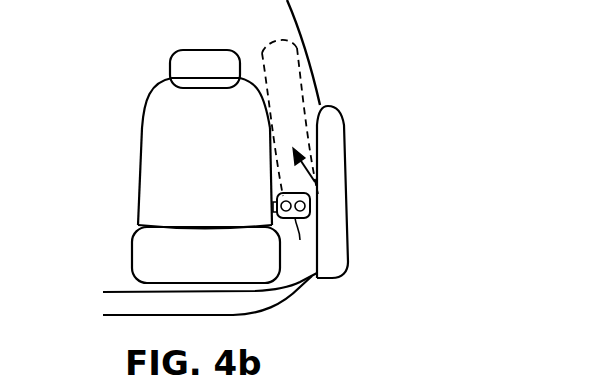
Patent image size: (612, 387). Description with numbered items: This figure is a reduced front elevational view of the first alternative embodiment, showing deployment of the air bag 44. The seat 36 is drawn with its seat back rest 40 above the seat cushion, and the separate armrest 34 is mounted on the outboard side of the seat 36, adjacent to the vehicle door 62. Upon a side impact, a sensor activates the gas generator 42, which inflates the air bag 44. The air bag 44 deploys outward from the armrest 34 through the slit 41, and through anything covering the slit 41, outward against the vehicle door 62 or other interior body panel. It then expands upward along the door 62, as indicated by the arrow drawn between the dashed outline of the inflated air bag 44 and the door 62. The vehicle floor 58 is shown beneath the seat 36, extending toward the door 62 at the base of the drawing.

The armrest 34 is at (297, 241).
The seat 36 is at (133, 146).
The seat back rest 40 is at (218, 155).
The slit 41 is at (310, 204).
The gas generator 42 is at (282, 193).
The air bag 44 is at (267, 42).
The vehicle floor 58 is at (295, 283).
The vehicle door 62 is at (344, 125).